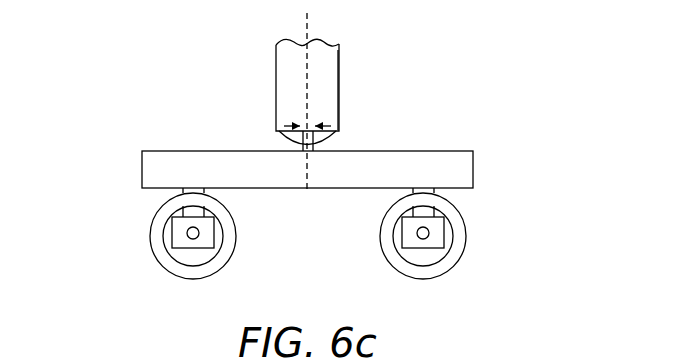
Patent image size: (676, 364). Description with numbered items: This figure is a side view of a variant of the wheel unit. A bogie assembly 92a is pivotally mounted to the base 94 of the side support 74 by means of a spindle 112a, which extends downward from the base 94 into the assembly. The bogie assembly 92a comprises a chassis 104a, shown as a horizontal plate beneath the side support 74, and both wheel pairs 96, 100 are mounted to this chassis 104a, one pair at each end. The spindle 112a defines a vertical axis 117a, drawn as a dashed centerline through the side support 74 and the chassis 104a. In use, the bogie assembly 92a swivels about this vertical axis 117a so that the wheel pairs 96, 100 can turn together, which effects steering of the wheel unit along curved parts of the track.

The vertical axis 117a is at (307, 25).
The side support 74 is at (272, 76).
The base 94 is at (331, 85).
The spindle 112a is at (302, 142).
The bogie assembly 92a is at (281, 195).
The chassis 104a is at (142, 168).
The wheel pair 96 is at (167, 270).
The wheel pair 100 is at (449, 270).